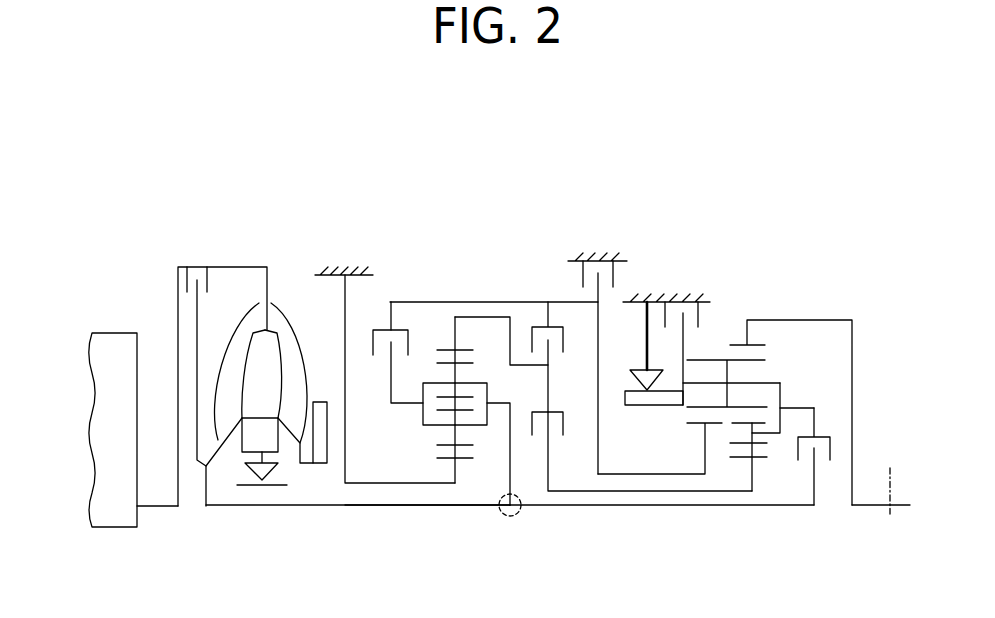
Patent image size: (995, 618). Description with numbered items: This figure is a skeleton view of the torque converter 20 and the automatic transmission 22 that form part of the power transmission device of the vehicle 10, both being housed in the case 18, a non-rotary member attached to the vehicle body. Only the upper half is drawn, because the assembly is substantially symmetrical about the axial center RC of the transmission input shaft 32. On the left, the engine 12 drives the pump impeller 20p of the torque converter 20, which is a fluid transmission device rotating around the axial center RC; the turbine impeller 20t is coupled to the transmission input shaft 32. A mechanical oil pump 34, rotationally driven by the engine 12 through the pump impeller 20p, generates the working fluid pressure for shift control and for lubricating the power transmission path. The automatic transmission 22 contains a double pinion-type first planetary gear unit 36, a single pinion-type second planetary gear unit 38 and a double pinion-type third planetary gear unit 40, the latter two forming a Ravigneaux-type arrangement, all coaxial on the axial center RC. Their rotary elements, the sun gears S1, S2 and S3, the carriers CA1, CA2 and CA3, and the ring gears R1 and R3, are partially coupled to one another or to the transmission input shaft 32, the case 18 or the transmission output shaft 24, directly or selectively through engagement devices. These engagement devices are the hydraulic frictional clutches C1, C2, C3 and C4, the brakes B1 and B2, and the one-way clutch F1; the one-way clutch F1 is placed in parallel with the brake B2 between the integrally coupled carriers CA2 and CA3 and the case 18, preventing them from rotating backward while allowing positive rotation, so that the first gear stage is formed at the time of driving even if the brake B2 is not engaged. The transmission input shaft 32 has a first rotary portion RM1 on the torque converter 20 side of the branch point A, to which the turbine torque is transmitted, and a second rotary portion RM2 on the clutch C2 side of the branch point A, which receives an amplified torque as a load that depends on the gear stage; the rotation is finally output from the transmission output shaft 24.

The vehicle 10 is at (264, 141).
The engine 12 is at (113, 340).
The case 18 is at (340, 270).
The torque converter 20 is at (276, 240).
The pump impeller 20p is at (291, 348).
The turbine impeller 20t is at (233, 350).
The automatic transmission 22 is at (461, 240).
The transmission output shaft 24 is at (863, 508).
The transmission input shaft 32 is at (265, 508).
The mechanical oil pump 34 is at (320, 402).
The first planetary gear unit 36 is at (450, 457).
The second planetary gear unit 38 is at (719, 456).
The third planetary gear unit 40 is at (791, 446).
The first rotary portion RM1 is at (380, 508).
The second rotary portion RM2 is at (620, 508).
The branch point A is at (510, 516).
The axial center RC is at (885, 479).
The brake B1 is at (583, 277).
The brake B2 is at (700, 316).
The clutch C1 is at (565, 428).
The clutch C2 is at (830, 462).
The clutch C3 is at (565, 345).
The clutch C4 is at (373, 338).
The carrier CA1 is at (422, 418).
The carrier CA2 is at (761, 360).
The carrier CA3 is at (810, 380).
The ring gear R1 is at (490, 345).
The ring gear R3 is at (747, 338).
The sun gear S1 is at (472, 456).
The sun gear S2 is at (695, 426).
The sun gear S3 is at (755, 460).
The one-way clutch F1 is at (650, 353).